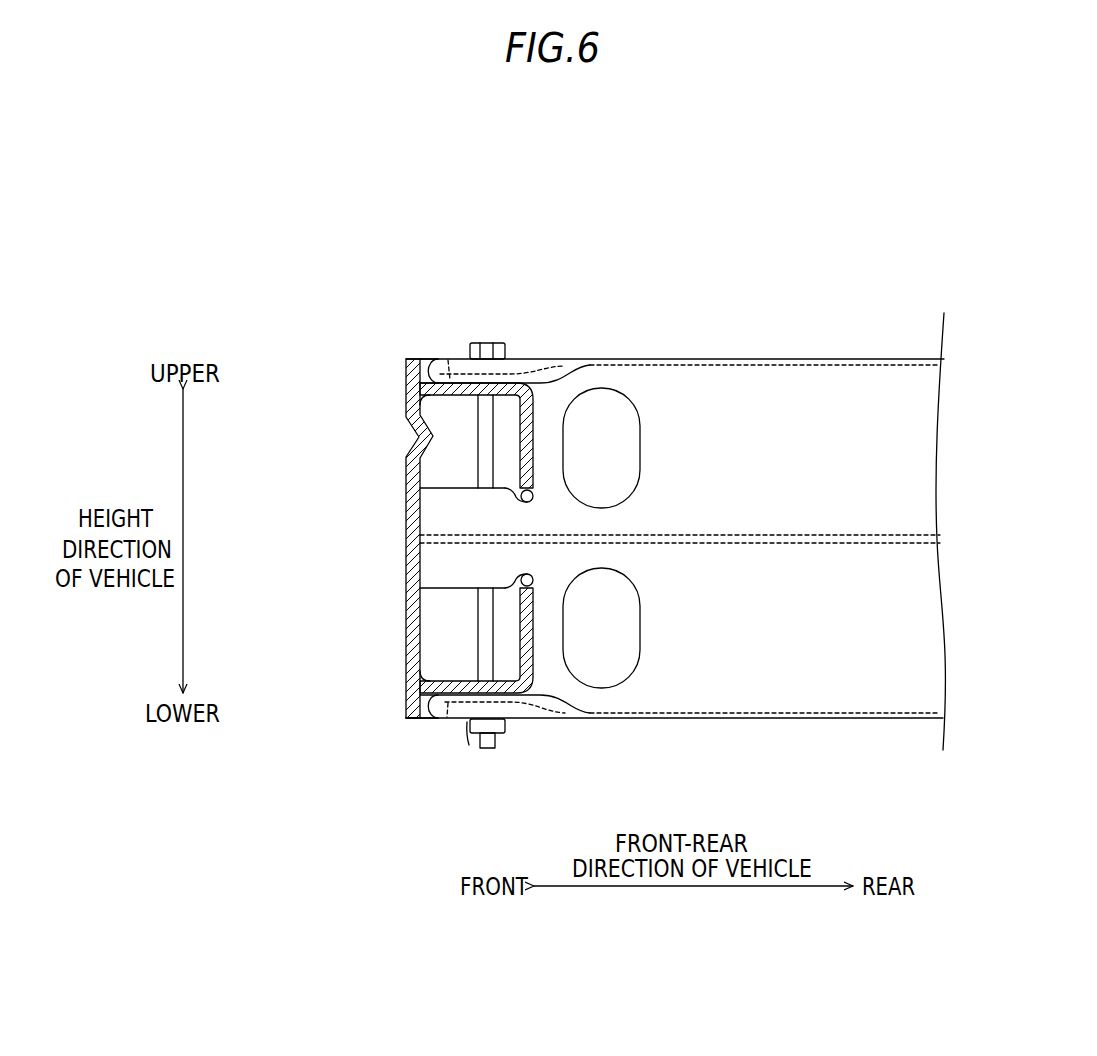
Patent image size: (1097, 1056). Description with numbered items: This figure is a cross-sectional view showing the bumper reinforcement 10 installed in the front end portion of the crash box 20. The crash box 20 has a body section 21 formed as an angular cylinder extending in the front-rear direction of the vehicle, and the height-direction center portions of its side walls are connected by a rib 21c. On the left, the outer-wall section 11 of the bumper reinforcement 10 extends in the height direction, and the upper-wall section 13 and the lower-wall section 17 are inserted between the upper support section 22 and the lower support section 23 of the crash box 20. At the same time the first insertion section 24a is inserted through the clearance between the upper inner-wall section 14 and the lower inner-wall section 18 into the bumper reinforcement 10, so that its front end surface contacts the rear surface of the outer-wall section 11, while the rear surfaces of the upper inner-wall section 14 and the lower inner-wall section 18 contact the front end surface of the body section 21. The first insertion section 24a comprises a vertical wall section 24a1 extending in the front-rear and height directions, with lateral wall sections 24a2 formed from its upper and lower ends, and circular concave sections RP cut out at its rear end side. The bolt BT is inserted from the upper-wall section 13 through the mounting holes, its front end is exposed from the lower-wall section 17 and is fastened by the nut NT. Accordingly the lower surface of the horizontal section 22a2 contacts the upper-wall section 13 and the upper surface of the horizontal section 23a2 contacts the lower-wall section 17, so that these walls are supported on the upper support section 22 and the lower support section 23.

The bumper reinforcement 10 is at (383, 537).
The outer-wall section 11 is at (408, 687).
The upper-wall section 13 is at (428, 373).
The upper inner-wall section 14 is at (535, 440).
The lower-wall section 17 is at (428, 720).
The lower inner-wall section 18 is at (535, 627).
The crash box 20 is at (675, 510).
The body section 21 is at (822, 358).
The rib 21c is at (790, 533).
The upper support section 22 is at (463, 356).
The horizontal section 22a2 is at (448, 358).
The lower support section 23 is at (467, 722).
The horizontal section 23a2 is at (448, 703).
The first insertion section 24a is at (395, 538).
The vertical wall section 24a1 is at (518, 558).
The lateral wall section 24a2 is at (312, 627).
The bolt BT is at (507, 352).
The nut NT is at (507, 723).
The concave section RP is at (533, 490).